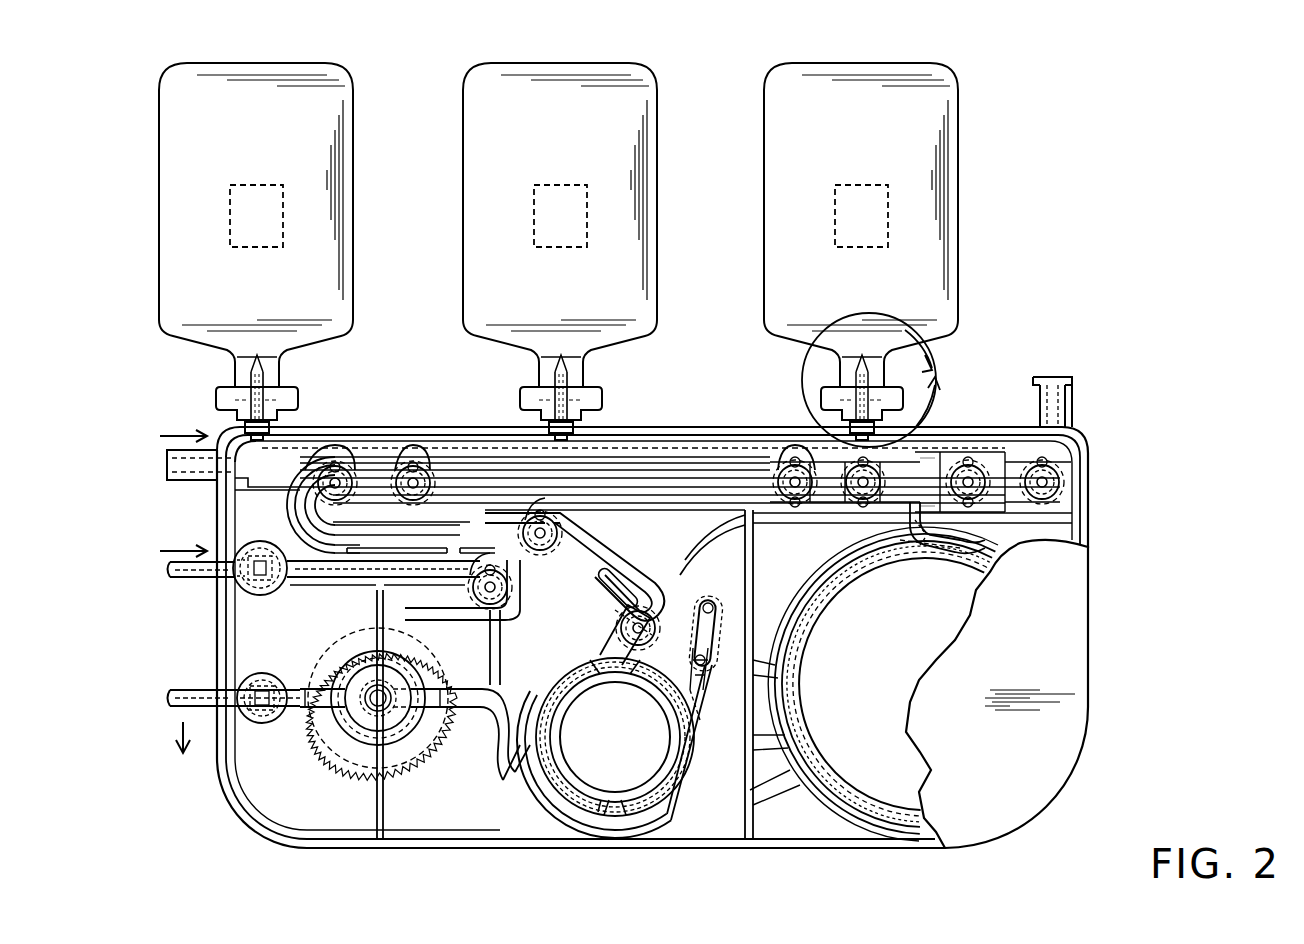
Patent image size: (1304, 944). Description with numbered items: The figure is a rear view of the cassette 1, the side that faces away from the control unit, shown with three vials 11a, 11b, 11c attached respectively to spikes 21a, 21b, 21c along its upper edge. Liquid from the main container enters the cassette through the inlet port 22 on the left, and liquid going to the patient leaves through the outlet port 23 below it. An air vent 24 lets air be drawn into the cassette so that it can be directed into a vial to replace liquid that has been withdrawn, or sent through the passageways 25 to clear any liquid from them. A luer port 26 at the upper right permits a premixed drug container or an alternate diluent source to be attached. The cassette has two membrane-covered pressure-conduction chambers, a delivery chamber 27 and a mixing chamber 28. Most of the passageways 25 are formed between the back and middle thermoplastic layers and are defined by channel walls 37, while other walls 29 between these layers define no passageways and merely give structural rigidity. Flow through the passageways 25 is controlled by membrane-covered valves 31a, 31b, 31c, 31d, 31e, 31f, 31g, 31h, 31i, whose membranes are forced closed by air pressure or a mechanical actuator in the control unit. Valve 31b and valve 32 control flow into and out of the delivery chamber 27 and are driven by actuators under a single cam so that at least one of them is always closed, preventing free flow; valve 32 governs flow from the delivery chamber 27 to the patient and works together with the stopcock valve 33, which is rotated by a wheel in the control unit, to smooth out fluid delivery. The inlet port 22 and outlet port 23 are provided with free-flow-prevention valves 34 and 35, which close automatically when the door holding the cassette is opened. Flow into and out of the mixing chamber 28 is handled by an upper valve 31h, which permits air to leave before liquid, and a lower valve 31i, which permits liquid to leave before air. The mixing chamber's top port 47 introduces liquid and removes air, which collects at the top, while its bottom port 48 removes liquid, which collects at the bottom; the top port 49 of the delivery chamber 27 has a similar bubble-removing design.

The cassette 1 is at (1145, 622).
The vial 11a is at (335, 74).
The vial 11b is at (637, 74).
The vial 11c is at (938, 74).
The spike 21a is at (264, 376).
The spike 21b is at (568, 376).
The spike 21c is at (854, 376).
The inlet port 22 is at (168, 570).
The outlet port 23 is at (172, 690).
The air vent 24 is at (167, 460).
The passageways 25 is at (678, 518).
The luer port 26 is at (1060, 402).
The delivery chamber 27 is at (615, 737).
The mixing chamber 28 is at (904, 800).
The walls 29 is at (384, 818).
The valve 31a is at (470, 600).
The valve 31b is at (618, 622).
The valve 31c is at (548, 560).
The valve 31d is at (313, 490).
The valve 31e is at (422, 500).
The valve 31f is at (790, 462).
The valve 31g is at (860, 505).
The upper valve 31h is at (958, 460).
The lower valve 31i is at (1062, 482).
The valve 32 is at (709, 604).
The stopcock valve 33 is at (420, 765).
The free-flow-prevention valve 34 is at (268, 597).
The free-flow-prevention valve 35 is at (272, 728).
The channel walls 37 is at (520, 612).
The top port 47 is at (920, 540).
The bottom port 48 is at (942, 850).
The top port 49 is at (615, 680).